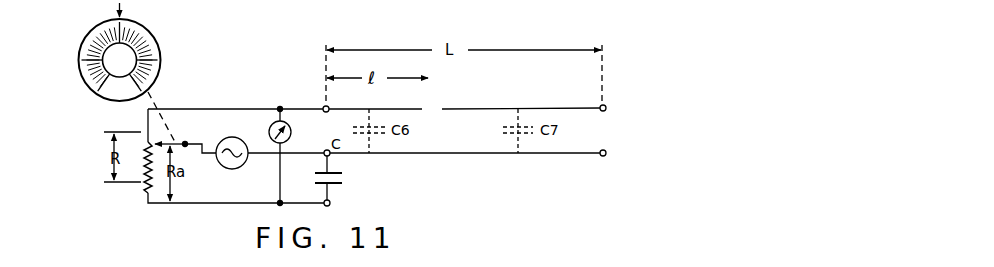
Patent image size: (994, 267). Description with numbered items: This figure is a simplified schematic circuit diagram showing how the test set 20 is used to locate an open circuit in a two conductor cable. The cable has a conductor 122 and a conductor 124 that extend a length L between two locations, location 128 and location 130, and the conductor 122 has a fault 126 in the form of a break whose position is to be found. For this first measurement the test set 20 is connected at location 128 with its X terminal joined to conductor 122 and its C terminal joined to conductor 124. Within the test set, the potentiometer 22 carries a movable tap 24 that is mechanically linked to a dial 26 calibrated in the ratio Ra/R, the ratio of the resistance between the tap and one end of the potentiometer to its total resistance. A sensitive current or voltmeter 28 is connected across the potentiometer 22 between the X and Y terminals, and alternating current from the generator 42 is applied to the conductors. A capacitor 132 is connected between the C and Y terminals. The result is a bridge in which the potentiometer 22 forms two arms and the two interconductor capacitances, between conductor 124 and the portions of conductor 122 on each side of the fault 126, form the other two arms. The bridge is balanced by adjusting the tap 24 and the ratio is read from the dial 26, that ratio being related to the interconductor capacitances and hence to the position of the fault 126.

The test set 20 is at (187, 209).
The potentiometer 22 is at (143, 170).
The tap 24 is at (166, 142).
The dial 26 is at (160, 53).
The voltmeter 28 is at (270, 127).
The generator 42 is at (240, 167).
The conductor 122 is at (388, 107).
The conductor 124 is at (542, 156).
The fault 126 is at (434, 108).
The location 128 is at (317, 100).
The location 130 is at (616, 120).
The capacitor 132 is at (343, 178).